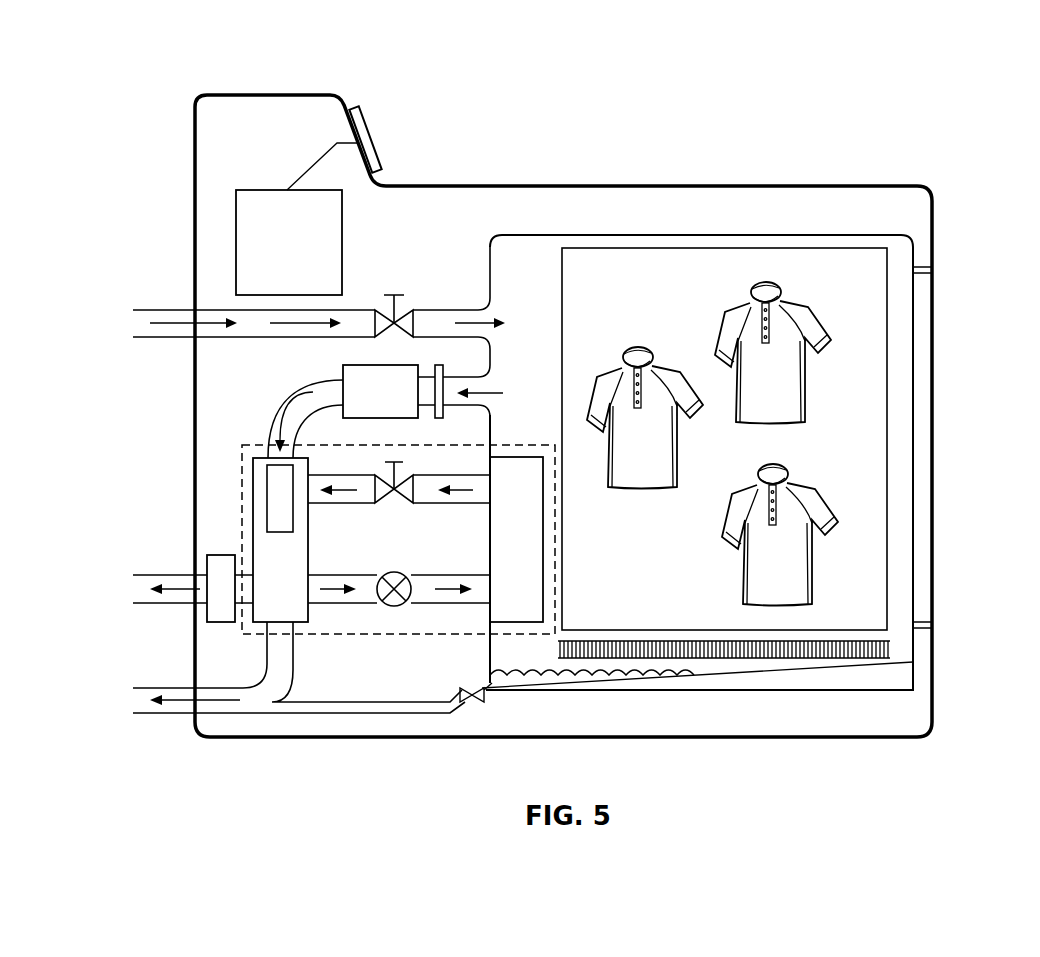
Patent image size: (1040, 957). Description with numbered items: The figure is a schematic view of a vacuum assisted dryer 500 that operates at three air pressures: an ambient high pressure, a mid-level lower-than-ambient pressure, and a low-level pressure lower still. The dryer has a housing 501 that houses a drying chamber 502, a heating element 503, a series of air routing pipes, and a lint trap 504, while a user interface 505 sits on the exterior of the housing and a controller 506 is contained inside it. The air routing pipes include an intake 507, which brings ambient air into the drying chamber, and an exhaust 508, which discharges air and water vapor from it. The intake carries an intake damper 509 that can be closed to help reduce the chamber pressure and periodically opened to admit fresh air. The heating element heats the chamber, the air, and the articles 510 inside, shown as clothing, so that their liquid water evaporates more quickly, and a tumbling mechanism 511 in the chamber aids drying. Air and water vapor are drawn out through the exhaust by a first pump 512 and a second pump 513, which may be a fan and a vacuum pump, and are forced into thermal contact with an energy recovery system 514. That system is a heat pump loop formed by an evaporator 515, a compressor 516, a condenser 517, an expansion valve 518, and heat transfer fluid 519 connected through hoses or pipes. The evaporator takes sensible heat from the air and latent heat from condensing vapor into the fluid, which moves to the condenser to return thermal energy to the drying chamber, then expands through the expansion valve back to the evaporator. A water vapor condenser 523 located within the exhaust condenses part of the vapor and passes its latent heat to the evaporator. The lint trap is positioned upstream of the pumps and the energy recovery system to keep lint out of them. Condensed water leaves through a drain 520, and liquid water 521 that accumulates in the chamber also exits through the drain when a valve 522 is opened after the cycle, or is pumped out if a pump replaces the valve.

The vacuum assisted dryer 500 is at (174, 52).
The housing 501 is at (885, 186).
The drying chamber 502 is at (835, 235).
The heating element 503 is at (890, 650).
The lint trap 504 is at (445, 372).
The user interface 505 is at (370, 130).
The controller 506 is at (268, 190).
The intake 507 is at (163, 309).
The exhaust 508 is at (157, 575).
The intake damper 509 is at (396, 292).
The articles 510 is at (660, 449).
The tumbling mechanism 511 is at (728, 248).
The first pump 512 is at (343, 372).
The second pump 513 is at (217, 555).
The energy recovery system 514 is at (253, 470).
The evaporator 515 is at (242, 495).
The compressor 516 is at (392, 606).
The condenser 517 is at (545, 540).
The expansion valve 518 is at (399, 458).
The heat transfer fluid 519 is at (452, 583).
The drain 520 is at (157, 688).
The liquid water 521 is at (520, 683).
The valve 522 is at (468, 688).
The water vapor condenser 523 is at (267, 468).